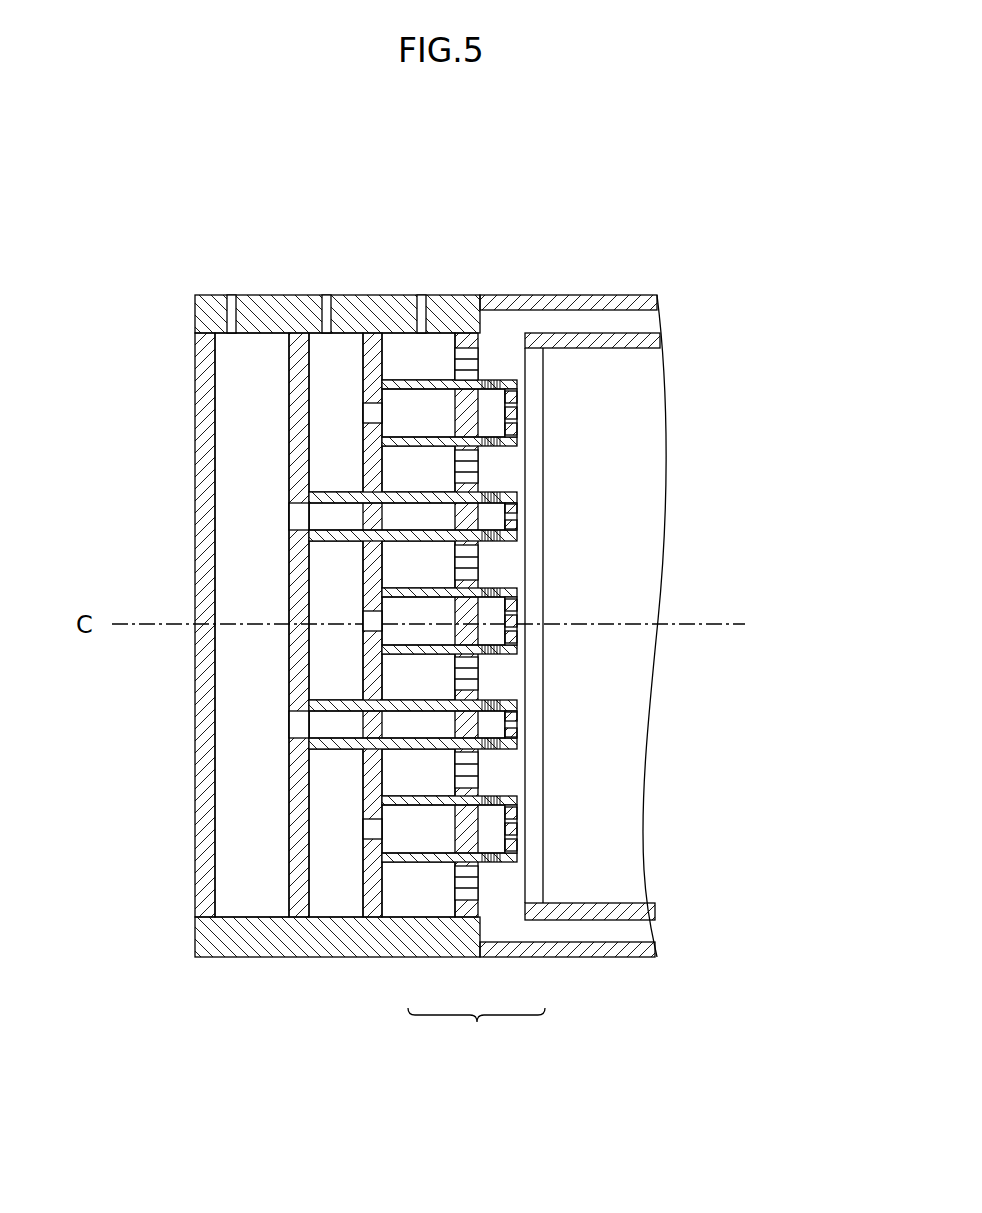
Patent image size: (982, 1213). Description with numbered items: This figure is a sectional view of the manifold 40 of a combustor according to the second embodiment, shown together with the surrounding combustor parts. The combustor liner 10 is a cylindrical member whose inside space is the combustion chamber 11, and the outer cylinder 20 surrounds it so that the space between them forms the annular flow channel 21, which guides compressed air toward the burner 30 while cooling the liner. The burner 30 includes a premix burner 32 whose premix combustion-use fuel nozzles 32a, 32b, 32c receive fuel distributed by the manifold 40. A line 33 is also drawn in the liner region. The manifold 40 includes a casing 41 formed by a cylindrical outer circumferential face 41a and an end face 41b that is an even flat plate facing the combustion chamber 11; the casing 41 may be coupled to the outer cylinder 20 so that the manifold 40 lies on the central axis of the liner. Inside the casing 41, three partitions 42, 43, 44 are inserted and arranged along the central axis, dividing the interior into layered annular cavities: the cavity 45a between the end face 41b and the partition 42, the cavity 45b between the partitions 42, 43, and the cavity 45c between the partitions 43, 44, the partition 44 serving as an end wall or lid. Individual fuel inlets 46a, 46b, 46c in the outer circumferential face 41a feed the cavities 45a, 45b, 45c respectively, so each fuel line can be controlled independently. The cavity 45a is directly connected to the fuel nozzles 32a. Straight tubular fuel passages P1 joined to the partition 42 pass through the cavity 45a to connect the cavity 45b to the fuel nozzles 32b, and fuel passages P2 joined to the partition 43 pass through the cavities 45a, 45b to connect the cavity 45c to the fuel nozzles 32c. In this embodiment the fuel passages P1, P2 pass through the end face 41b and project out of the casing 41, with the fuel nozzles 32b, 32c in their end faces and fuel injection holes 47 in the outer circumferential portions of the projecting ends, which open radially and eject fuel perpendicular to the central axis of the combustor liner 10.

The combustor liner 10 is at (638, 334).
The combustion chamber 11 is at (654, 579).
The outer cylinder 20 is at (595, 295).
The annular flow channel 21 is at (639, 940).
The burner 30 is at (617, 799).
The premix burner 32 is at (537, 501).
The premix combustion-use fuel nozzle 32a is at (478, 352).
The premix combustion-use fuel nozzle 32b is at (517, 397).
The premix combustion-use fuel nozzle 32c is at (517, 507).
The partition plate 33 is at (546, 448).
The manifold 40 is at (185, 408).
The casing 41 is at (476, 1033).
The outer circumferential face 41a is at (420, 958).
The end face 41b is at (479, 930).
The partition 42 is at (364, 903).
The partition 43 is at (289, 903).
The partition 44 is at (195, 805).
The cavity 45a is at (445, 370).
The cavity 45b is at (363, 427).
The cavity 45c is at (277, 491).
The fuel inlet 46a is at (426, 309).
The fuel inlet 46b is at (331, 309).
The fuel inlet 46c is at (236, 309).
The fuel injection hole 47 is at (494, 436).
The fuel passage P1 is at (426, 427).
The fuel passage P2 is at (399, 530).